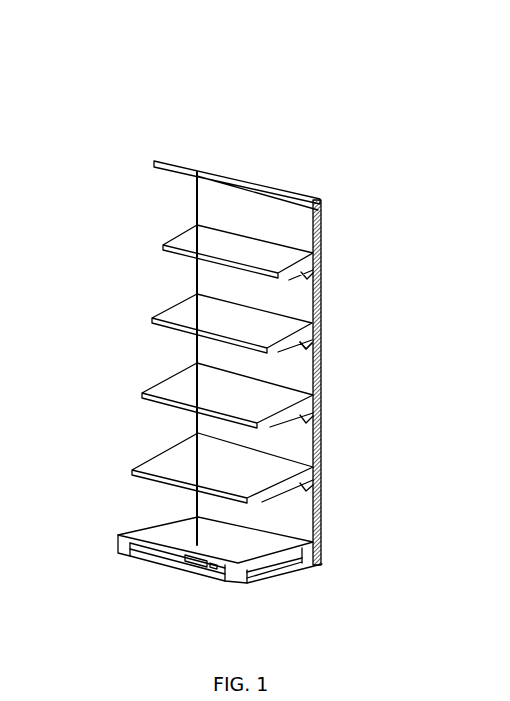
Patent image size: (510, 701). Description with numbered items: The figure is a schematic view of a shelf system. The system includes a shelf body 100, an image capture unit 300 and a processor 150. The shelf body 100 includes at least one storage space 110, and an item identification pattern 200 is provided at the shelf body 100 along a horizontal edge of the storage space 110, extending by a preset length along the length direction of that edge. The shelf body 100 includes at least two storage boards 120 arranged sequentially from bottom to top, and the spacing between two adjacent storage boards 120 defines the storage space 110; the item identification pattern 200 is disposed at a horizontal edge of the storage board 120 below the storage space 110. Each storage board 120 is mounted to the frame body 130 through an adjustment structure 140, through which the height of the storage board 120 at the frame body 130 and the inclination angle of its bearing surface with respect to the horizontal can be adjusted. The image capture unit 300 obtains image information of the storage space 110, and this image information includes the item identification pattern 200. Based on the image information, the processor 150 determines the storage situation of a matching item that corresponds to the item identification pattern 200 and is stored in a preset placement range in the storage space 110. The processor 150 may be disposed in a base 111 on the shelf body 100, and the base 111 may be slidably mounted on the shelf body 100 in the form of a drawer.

The shelf body 100 is at (177, 143).
The storage space 110 is at (203, 218).
The base 111 is at (118, 553).
The storage board 120 is at (200, 233).
The frame body 130 is at (320, 292).
The adjustment structure 140 is at (308, 335).
The processor 150 is at (198, 560).
The item identification pattern 200 is at (183, 328).
The image capture unit 300 is at (228, 183).